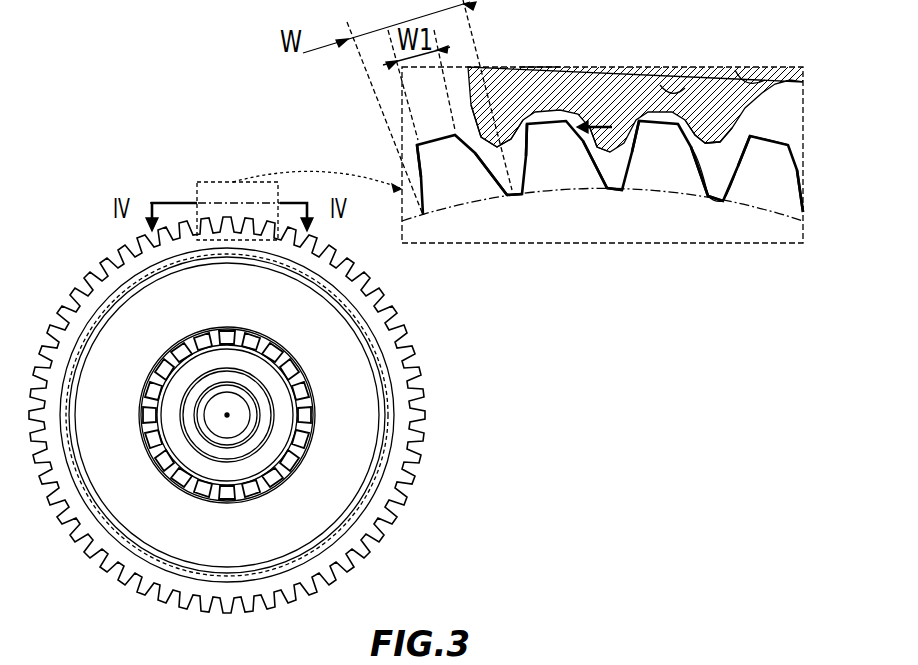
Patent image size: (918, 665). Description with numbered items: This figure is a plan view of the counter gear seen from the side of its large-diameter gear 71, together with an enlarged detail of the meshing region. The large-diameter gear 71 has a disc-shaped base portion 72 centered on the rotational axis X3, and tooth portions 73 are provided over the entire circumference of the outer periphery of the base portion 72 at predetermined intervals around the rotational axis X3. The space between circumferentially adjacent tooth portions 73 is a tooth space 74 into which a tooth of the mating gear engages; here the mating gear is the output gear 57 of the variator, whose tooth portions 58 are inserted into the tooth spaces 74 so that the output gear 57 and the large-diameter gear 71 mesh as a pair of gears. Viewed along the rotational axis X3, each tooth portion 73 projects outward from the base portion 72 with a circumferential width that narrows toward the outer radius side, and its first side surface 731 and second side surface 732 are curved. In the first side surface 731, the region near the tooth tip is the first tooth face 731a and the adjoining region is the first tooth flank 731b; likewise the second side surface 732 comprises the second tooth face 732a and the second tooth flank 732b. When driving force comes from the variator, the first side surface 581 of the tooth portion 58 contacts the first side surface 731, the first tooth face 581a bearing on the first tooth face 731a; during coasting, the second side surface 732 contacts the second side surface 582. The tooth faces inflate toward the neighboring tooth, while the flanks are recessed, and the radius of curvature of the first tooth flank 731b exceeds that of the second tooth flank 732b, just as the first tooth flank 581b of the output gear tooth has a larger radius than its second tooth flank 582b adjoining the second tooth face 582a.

The large-diameter gear 71 is at (425, 514).
The base portion 72 is at (362, 384).
The tooth portion 73 is at (417, 430).
The tooth space 74 is at (420, 447).
The first side surface 731 is at (492, 180).
The second side surface 732 is at (412, 178).
The first tooth face 731a is at (725, 160).
The second tooth face 732a is at (790, 168).
The first tooth flank 731b is at (712, 196).
The second tooth flank 732b is at (728, 200).
The output gear 57 is at (540, 66).
The tooth portion 58 is at (810, 62).
The first side surface 581 is at (593, 67).
The second side surface 582 is at (645, 80).
The first tooth face 581a is at (625, 150).
The first tooth flank 581b is at (683, 78).
The second tooth face 582a is at (770, 134).
The second tooth flank 582b is at (752, 67).
The rotational axis X3 is at (227, 415).